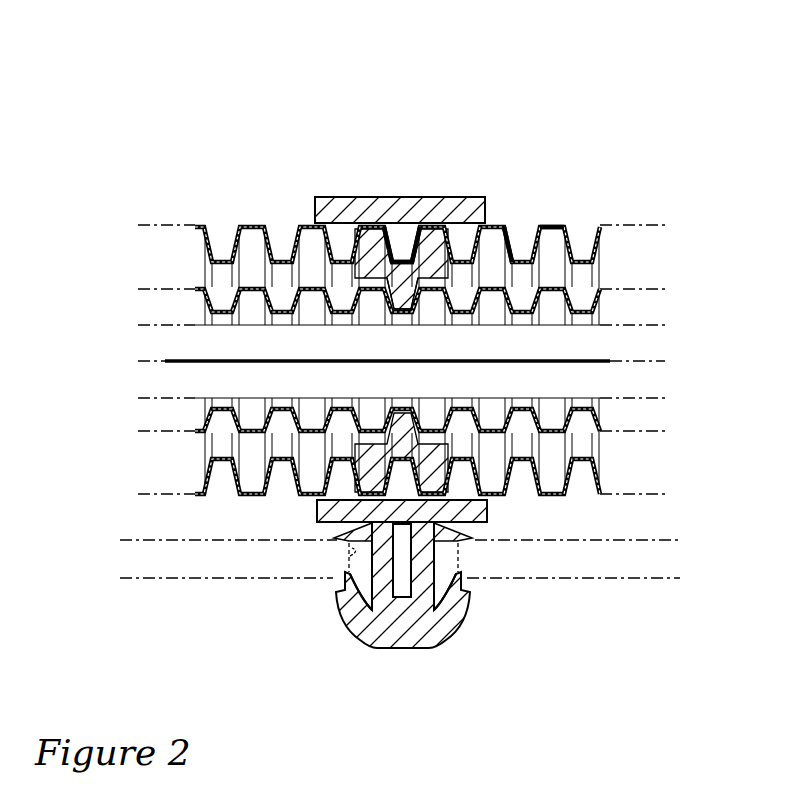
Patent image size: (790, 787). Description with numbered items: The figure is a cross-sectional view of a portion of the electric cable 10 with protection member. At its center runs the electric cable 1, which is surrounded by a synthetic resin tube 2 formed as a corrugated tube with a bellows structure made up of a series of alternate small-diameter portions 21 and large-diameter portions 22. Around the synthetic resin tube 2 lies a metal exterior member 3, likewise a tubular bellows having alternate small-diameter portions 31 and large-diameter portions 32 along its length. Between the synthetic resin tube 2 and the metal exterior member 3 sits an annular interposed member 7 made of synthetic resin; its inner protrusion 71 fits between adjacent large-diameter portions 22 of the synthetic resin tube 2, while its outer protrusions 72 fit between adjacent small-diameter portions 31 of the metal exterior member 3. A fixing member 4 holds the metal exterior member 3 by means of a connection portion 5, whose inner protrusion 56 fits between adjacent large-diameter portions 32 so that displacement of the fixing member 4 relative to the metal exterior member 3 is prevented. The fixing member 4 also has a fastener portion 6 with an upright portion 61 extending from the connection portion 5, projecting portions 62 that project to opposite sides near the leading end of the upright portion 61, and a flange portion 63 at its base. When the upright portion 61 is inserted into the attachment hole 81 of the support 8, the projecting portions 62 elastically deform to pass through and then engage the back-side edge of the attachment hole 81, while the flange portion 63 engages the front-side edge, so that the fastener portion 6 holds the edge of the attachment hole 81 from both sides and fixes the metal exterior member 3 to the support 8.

The electric cable with protection member 10 is at (636, 70).
The electric cable 1 is at (590, 382).
The synthetic resin tube 2 is at (252, 278).
The small-diameter portion 21 is at (578, 410).
The large-diameter portion 22 is at (576, 470).
The metal exterior member 3 is at (570, 220).
The small-diameter portion 31 is at (524, 245).
The large-diameter portion 32 is at (518, 258).
The fixing member 4 is at (506, 524).
The connection portion 5 is at (316, 195).
The inner protrusion 56 is at (402, 238).
The fastener portion 6 is at (306, 594).
The upright portion 61 is at (433, 583).
The projecting portion 62 is at (343, 614).
The flange portion 63 is at (340, 532).
The interposed member 7 is at (355, 268).
The inner protrusion 71 is at (400, 437).
The outer protrusion 72 is at (397, 262).
The support 8 is at (627, 578).
The attachment hole 81 is at (350, 556).